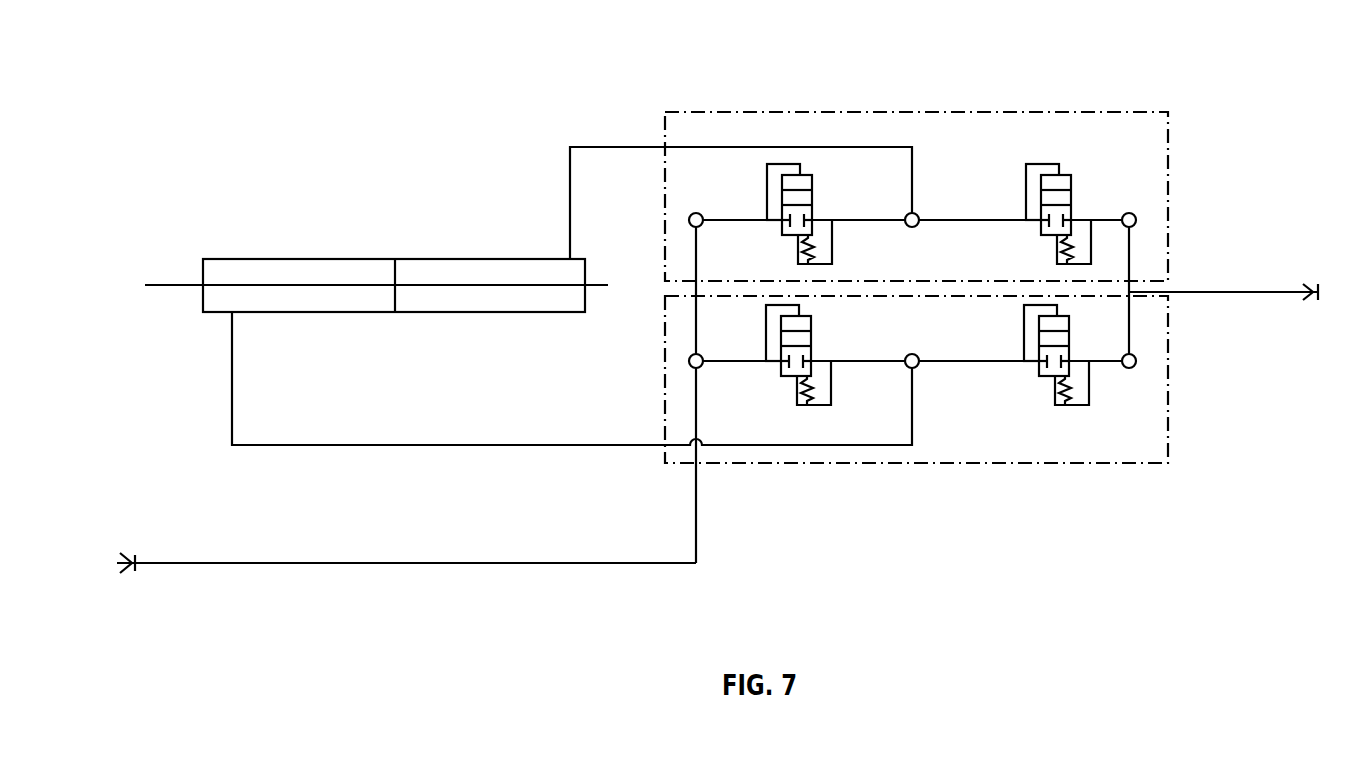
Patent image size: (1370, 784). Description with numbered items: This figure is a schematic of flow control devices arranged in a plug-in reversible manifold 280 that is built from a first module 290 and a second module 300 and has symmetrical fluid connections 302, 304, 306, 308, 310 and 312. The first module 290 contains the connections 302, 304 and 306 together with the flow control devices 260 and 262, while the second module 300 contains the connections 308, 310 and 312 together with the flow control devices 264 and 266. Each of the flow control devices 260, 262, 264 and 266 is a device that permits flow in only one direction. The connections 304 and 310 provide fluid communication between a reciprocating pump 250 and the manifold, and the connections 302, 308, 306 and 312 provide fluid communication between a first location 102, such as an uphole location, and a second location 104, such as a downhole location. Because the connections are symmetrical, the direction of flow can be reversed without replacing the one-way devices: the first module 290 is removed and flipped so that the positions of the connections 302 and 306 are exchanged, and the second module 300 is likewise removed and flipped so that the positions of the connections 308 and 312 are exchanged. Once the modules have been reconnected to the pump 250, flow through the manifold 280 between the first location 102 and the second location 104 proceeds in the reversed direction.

The first location 102 is at (282, 550).
The second location 104 is at (1268, 312).
The reciprocating pump 250 is at (446, 258).
The flow control device 260 is at (778, 163).
The flow control device 262 is at (1037, 163).
The flow control device 264 is at (816, 405).
The flow control device 266 is at (1080, 405).
The reversible manifold 280 is at (1134, 50).
The first module 290 is at (1170, 143).
The second module 300 is at (1170, 352).
The fluid connection 302 is at (689, 216).
The fluid connection 304 is at (908, 213).
The fluid connection 306 is at (1136, 219).
The fluid connection 308 is at (689, 357).
The fluid connection 310 is at (908, 354).
The fluid connection 312 is at (1136, 364).